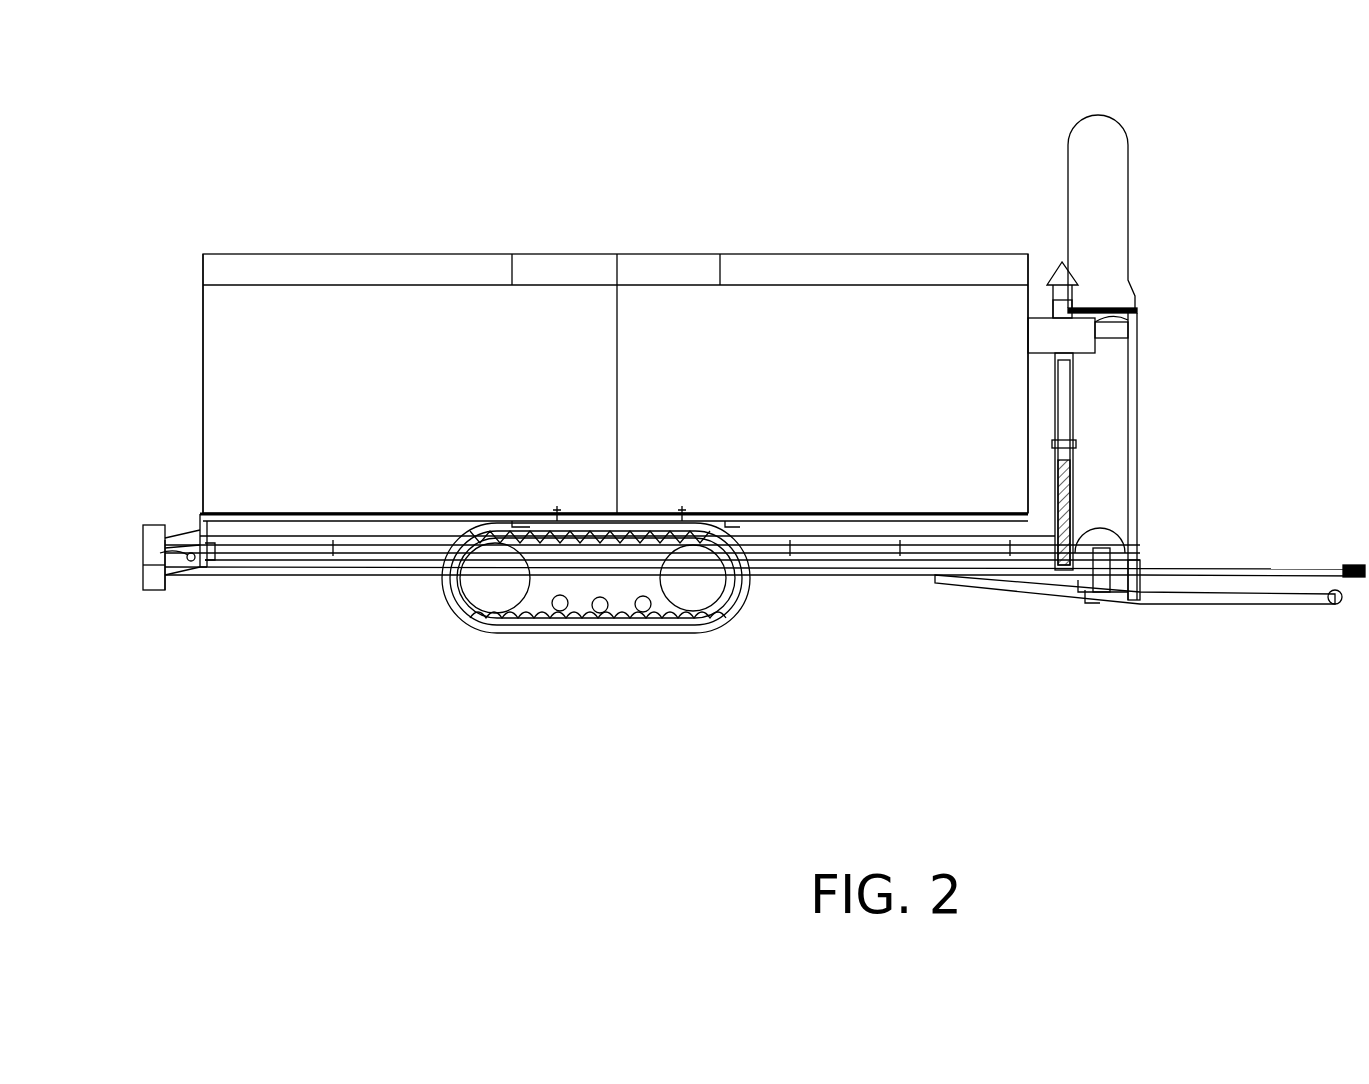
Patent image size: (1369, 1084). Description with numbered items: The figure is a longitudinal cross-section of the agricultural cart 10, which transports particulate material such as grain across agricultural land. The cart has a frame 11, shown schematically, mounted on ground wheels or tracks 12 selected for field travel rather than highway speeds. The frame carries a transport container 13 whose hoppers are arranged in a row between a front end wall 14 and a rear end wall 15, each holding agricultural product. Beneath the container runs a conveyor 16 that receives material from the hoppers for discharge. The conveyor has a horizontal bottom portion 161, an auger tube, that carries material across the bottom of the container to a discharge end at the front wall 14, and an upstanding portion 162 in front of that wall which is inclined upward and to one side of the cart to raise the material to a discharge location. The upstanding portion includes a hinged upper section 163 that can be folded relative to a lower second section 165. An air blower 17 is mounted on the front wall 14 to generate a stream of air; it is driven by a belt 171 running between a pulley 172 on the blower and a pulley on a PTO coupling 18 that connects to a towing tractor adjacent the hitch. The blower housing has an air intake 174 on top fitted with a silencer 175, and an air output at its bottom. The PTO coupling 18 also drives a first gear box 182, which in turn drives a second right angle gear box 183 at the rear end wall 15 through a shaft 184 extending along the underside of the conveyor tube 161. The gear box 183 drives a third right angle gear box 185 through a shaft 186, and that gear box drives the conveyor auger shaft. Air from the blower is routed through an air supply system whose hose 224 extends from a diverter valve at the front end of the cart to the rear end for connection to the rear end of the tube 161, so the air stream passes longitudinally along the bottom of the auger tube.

The agricultural cart 10 is at (766, 184).
The frame 11 is at (1237, 608).
The ground wheels or tracks 12 is at (487, 592).
The transport container 13 is at (530, 235).
The front end wall 14 is at (1028, 420).
The rear end wall 15 is at (206, 400).
The conveyor 16 is at (768, 507).
The air blower 17 is at (1036, 338).
The PTO coupling 18 is at (1336, 606).
The horizontal bottom portion 161 is at (855, 530).
The upstanding portion 162 is at (1112, 362).
The hinged upper section 163 is at (1077, 173).
The lower second section 165 is at (1125, 396).
The belt 171 is at (1136, 443).
The pulley 172 is at (1140, 332).
The air intake 174 is at (1056, 302).
The silencer 175 is at (1055, 258).
The first gear box 182 is at (1138, 552).
The second gear box 183 is at (156, 576).
The shaft 184 is at (387, 577).
The third right angle gear box 185 is at (155, 525).
The shaft 186 is at (148, 541).
The hose 224 is at (243, 556).